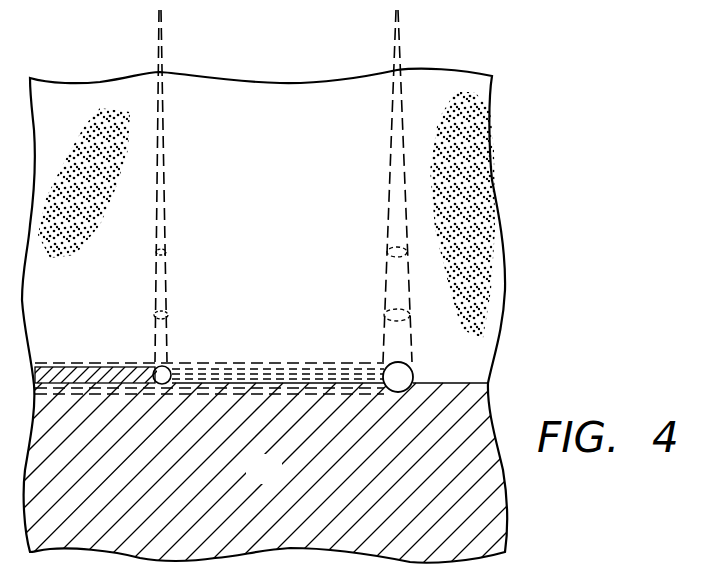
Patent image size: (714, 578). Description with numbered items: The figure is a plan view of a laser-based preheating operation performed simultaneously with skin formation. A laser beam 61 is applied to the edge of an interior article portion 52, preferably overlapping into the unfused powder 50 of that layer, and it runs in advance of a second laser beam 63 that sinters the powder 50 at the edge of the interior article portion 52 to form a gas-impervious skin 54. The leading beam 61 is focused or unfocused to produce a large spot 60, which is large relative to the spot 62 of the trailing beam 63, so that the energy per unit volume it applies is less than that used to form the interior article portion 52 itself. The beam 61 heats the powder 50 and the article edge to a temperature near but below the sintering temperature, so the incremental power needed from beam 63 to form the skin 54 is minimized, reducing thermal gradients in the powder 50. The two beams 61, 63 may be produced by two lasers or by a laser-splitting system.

The unfused powder 50 is at (277, 228).
The interior article portion 52 is at (278, 481).
The gas-impervious skin 54 is at (98, 366).
The large spot 60 is at (404, 370).
The laser beam 61 is at (400, 52).
The spot 62 is at (163, 369).
The laser beam 63 is at (160, 50).